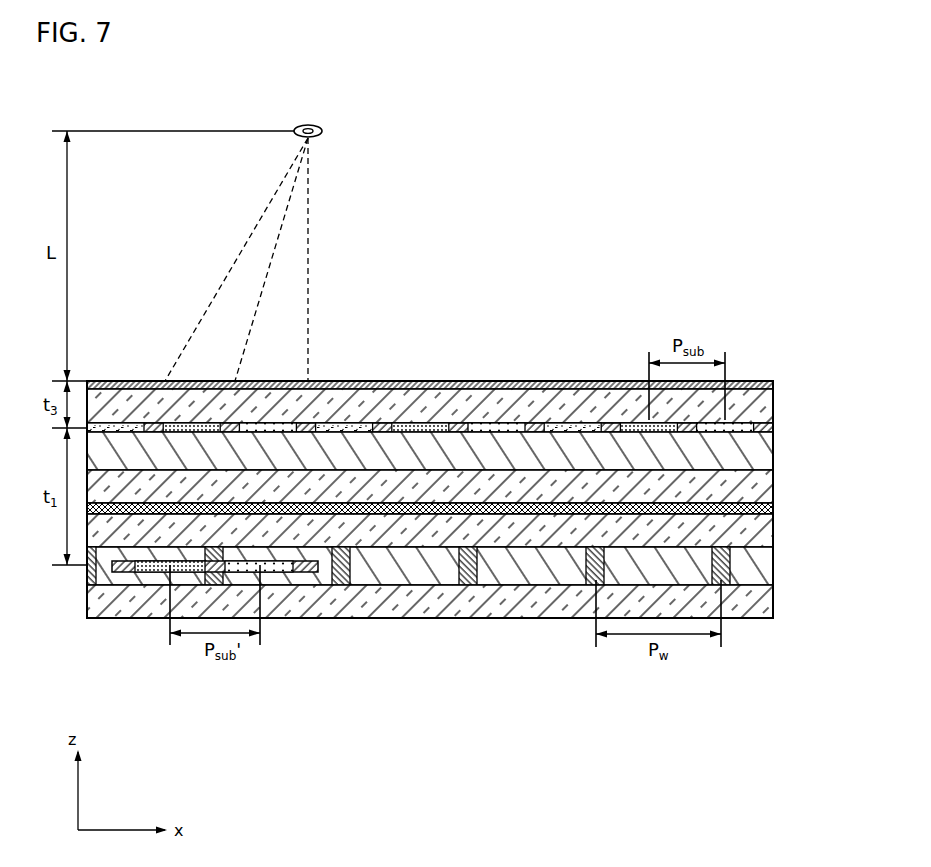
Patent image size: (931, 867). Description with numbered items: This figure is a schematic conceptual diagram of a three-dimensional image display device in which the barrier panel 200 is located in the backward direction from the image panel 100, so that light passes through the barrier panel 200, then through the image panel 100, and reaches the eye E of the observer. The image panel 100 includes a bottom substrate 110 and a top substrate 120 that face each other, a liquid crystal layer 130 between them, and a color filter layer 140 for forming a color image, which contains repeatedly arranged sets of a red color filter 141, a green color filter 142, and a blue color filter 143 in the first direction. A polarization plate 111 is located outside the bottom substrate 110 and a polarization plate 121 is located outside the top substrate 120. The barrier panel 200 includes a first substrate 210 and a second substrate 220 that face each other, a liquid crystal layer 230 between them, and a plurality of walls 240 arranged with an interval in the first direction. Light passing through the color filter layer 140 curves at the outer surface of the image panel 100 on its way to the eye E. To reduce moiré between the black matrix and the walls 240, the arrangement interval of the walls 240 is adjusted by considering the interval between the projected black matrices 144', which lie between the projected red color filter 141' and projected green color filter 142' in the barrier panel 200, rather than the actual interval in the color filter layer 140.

The image panel 100 is at (430, 382).
The bottom substrate 110 is at (380, 487).
The polarization plate 111 is at (638, 288).
The top substrate 120 is at (593, 397).
The polarization plate 121 is at (620, 386).
The liquid crystal layer 130 is at (412, 448).
The color filter layer 140 is at (430, 361).
The red color filter 141 is at (420, 381).
The green color filter 142 is at (496, 381).
The blue color filter 143 is at (570, 428).
The barrier panel 200 is at (428, 613).
The first substrate 210 is at (365, 607).
The second substrate 220 is at (510, 540).
The liquid crystal layer 230 is at (413, 577).
The walls 240 is at (465, 580).
The projected red color filter 141' is at (170, 637).
The projected green color filter 142' is at (266, 637).
The projected black matrices 144' is at (200, 637).
The eye E is at (323, 131).